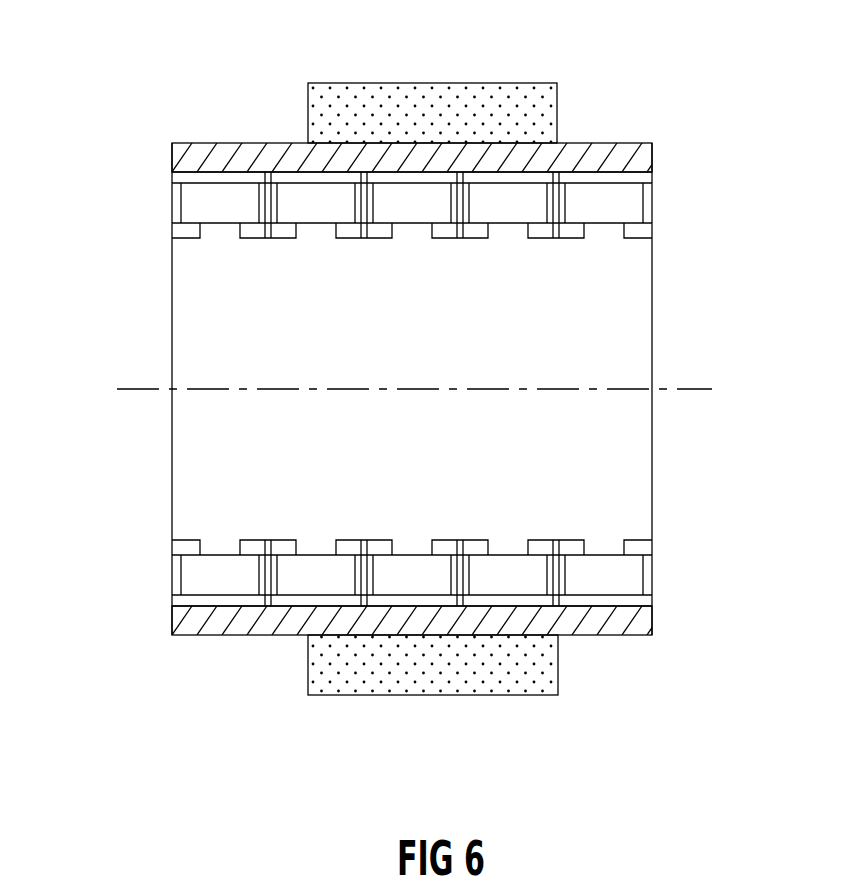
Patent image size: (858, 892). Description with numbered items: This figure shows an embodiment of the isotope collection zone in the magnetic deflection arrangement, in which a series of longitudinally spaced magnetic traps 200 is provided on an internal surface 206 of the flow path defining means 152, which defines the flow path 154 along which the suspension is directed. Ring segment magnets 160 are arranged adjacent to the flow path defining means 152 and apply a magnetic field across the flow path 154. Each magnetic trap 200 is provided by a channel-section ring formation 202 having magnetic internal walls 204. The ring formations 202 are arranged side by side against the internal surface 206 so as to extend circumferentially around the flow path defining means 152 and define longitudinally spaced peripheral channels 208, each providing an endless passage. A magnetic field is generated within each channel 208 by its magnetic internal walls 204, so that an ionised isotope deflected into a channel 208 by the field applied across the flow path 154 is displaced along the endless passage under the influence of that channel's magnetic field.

The flow path defining means 152 is at (172, 150).
The flow path 154 is at (250, 404).
The ring segment magnet 160 is at (400, 95).
The magnetic trap 200 is at (311, 168).
The channel-section ring formation 202 is at (172, 212).
The magnetic internal wall 204 is at (181, 203).
The internal surface 206 is at (174, 183).
The peripheral channel 208 is at (218, 558).